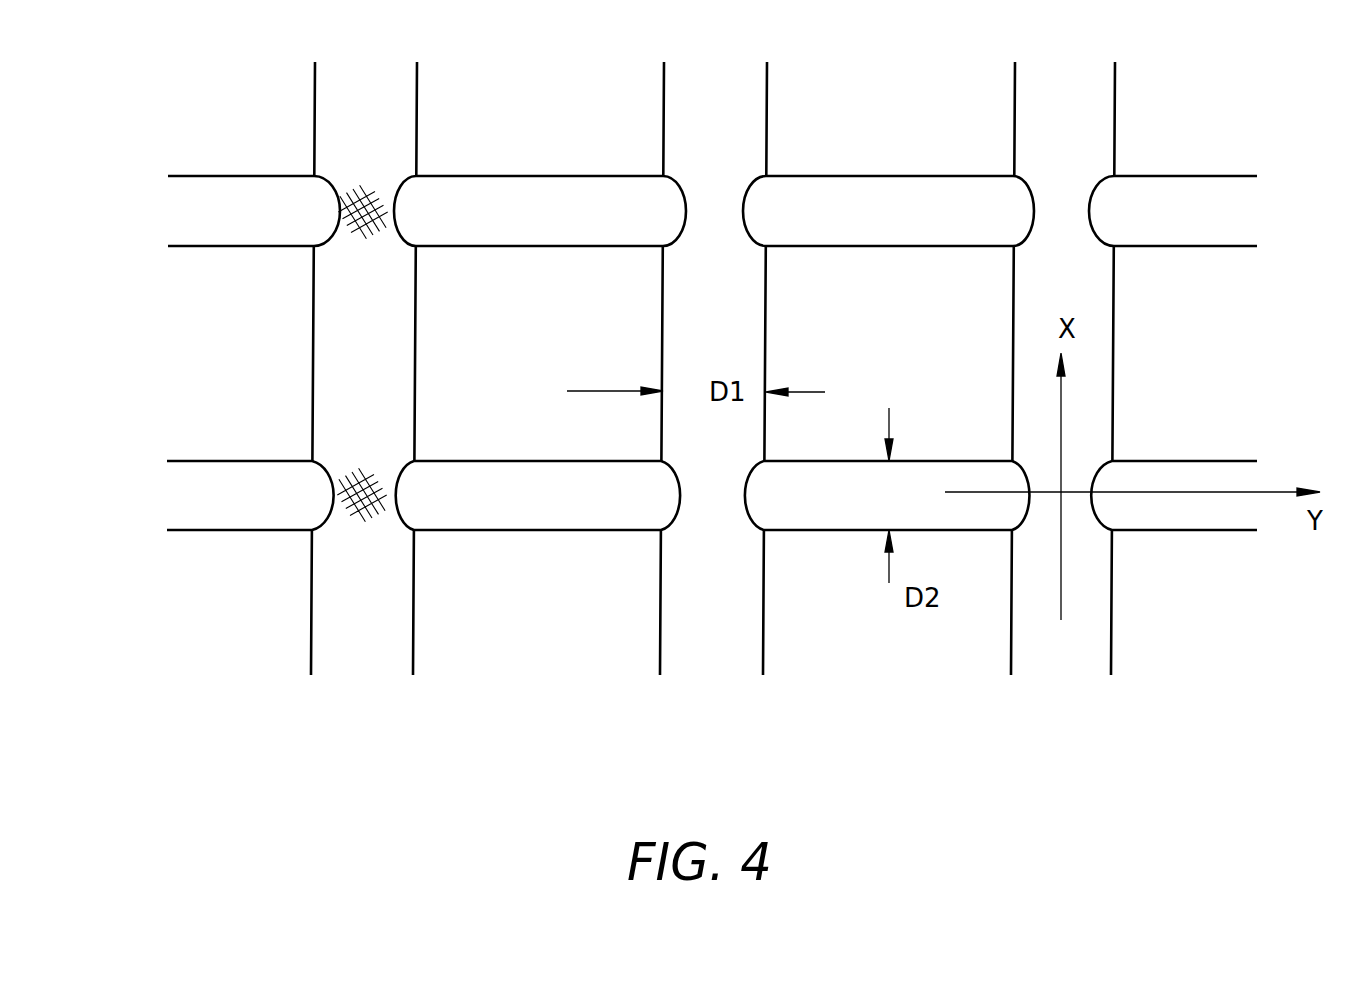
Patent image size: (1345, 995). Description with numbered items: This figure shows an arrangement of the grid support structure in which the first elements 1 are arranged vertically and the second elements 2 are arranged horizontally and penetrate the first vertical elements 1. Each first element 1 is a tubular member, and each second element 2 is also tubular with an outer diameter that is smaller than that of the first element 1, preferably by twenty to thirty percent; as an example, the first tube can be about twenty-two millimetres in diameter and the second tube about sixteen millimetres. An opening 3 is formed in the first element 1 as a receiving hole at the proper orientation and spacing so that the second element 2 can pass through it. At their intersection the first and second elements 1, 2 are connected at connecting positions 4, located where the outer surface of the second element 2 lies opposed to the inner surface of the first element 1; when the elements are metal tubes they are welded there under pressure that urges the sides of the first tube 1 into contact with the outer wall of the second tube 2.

The first element 1 is at (713, 353).
The second element 2 is at (528, 230).
The opening 3 is at (750, 238).
The connecting position 4 is at (358, 535).